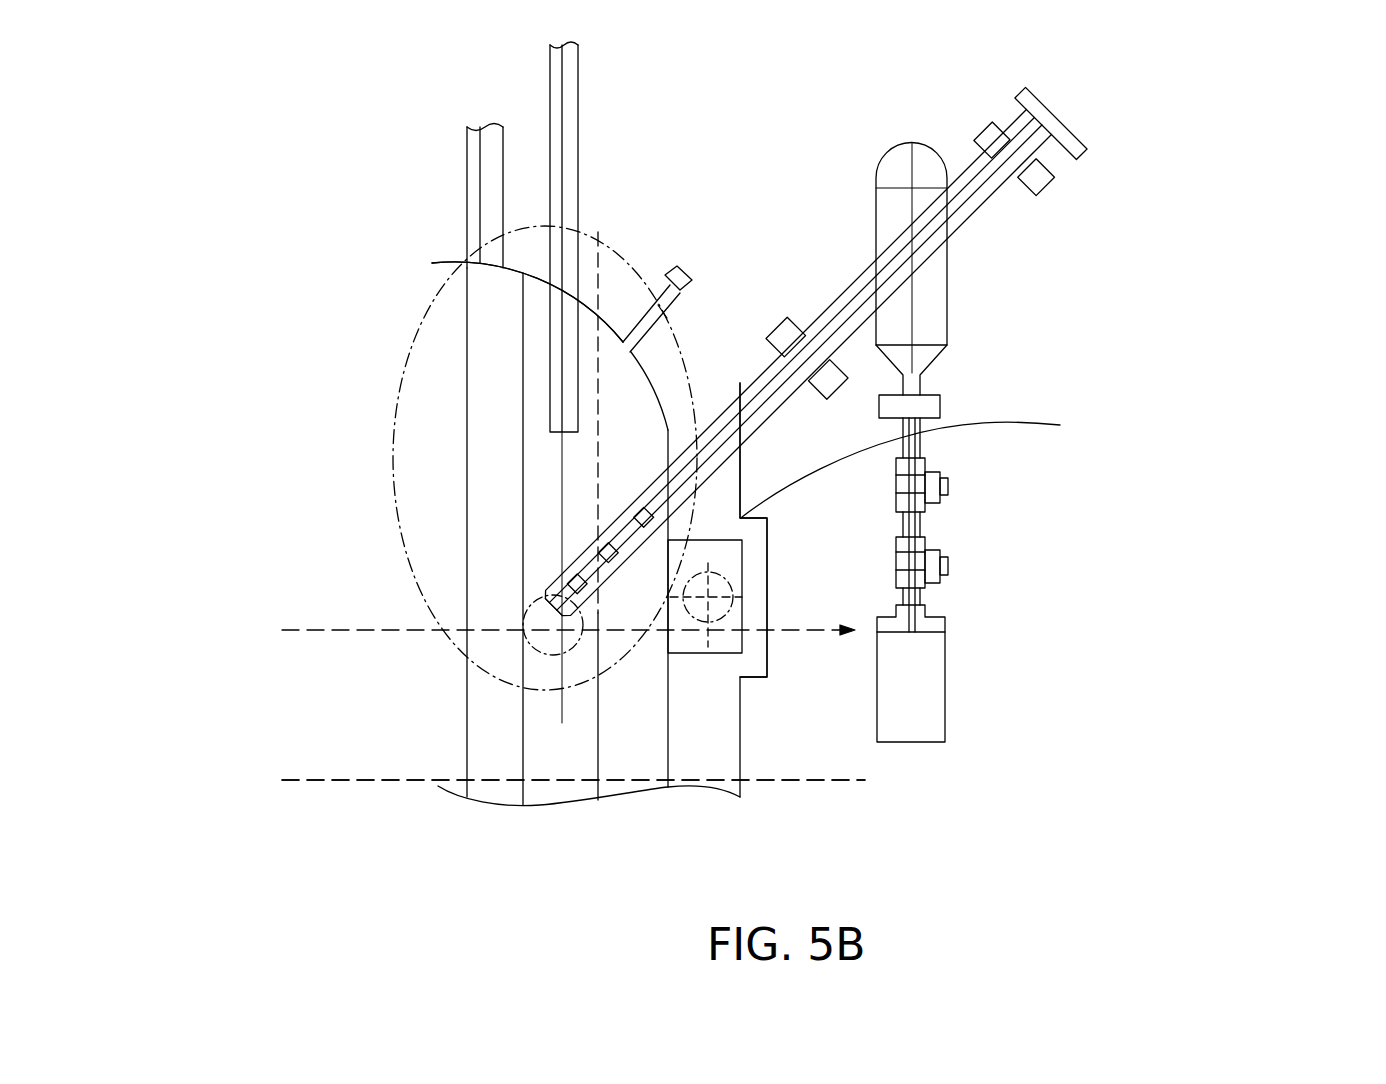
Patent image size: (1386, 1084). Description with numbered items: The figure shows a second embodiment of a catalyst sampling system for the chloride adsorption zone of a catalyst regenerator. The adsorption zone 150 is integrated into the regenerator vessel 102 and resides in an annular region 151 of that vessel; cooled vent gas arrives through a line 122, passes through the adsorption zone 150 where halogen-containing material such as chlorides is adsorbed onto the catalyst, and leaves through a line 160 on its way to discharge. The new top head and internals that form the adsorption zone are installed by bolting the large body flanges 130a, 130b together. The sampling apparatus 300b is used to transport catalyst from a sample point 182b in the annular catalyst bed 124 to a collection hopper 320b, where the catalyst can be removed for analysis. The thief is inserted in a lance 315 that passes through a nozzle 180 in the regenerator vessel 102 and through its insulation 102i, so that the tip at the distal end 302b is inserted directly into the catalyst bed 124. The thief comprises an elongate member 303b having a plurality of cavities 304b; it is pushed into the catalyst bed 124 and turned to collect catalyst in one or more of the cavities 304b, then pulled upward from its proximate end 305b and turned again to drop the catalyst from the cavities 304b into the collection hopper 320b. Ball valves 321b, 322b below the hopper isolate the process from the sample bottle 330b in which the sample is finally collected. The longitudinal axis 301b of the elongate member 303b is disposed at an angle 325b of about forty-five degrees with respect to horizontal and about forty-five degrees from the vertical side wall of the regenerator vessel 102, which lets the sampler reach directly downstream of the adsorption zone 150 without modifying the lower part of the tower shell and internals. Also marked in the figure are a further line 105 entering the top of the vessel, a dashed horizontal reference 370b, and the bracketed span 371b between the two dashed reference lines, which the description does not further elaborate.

The regenerator vessel 102 is at (668, 738).
The insulation 102i is at (740, 797).
The upper conduit 105 is at (572, 82).
The line 122 is at (688, 272).
The annular catalyst bed 124 is at (541, 569).
The large body flange 130a is at (743, 570).
The large body flange 130b is at (743, 617).
The adsorption zone 150 is at (418, 185).
The annular region 151 is at (430, 269).
The line 160 is at (487, 127).
The nozzle 180 is at (807, 358).
The sample point 182b is at (572, 637).
The sampling apparatus 300b is at (1270, 188).
The longitudinal axis 301b is at (796, 365).
The distal end 302b is at (553, 607).
The elongate member 303b is at (806, 363).
The cavities 304b is at (610, 550).
The proximate end 305b is at (1030, 144).
The lance 315 is at (622, 510).
The collection hopper 320b is at (947, 310).
The ball valve 321b is at (948, 487).
The ball valve 322b is at (948, 566).
The angle 325b is at (932, 464).
The sample bottle 330b is at (945, 690).
The reference plane 370b is at (345, 782).
The sampling zone 371b is at (248, 630).